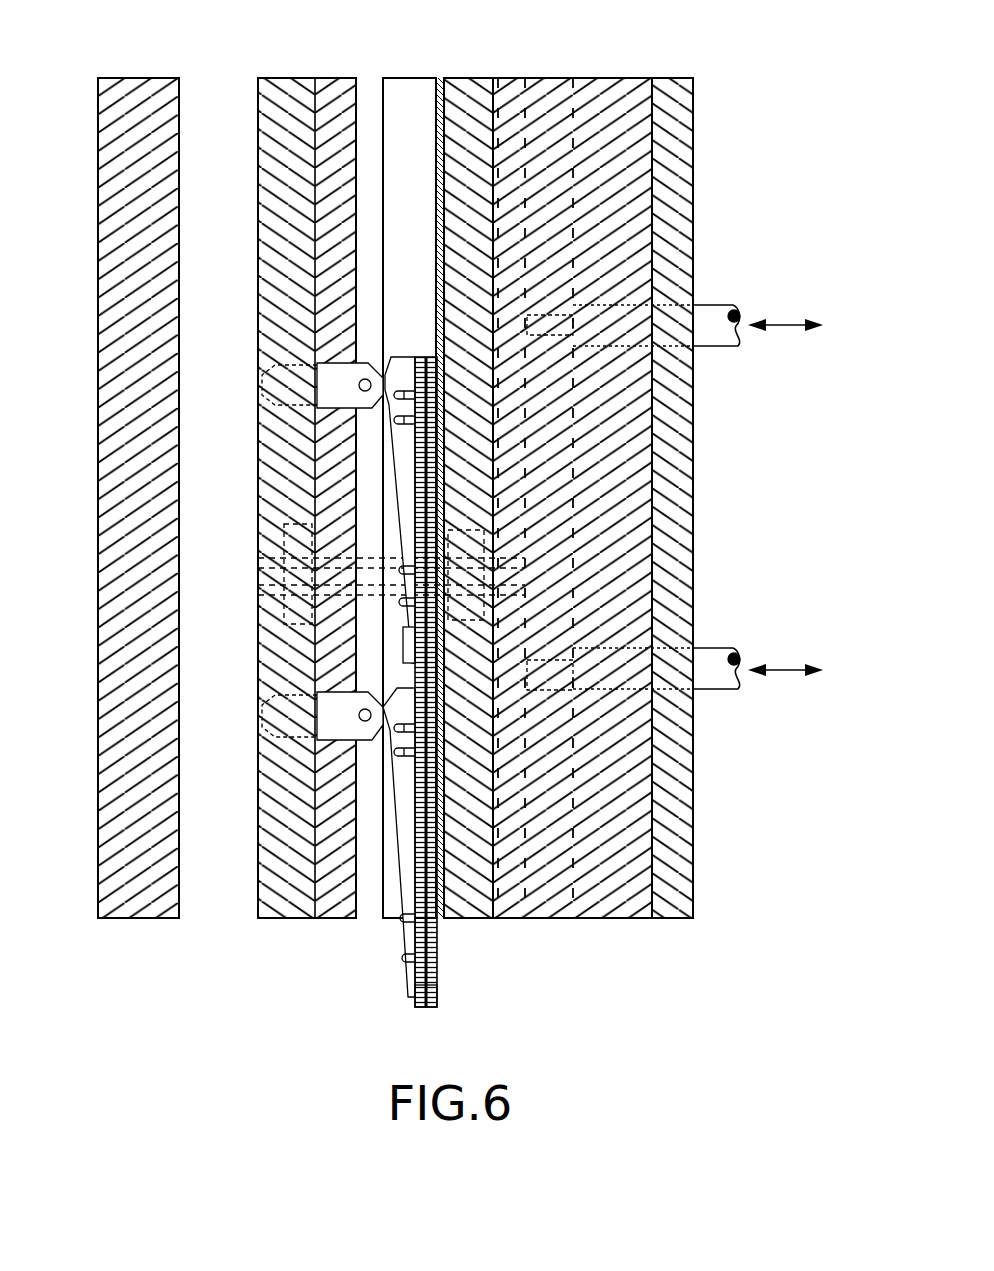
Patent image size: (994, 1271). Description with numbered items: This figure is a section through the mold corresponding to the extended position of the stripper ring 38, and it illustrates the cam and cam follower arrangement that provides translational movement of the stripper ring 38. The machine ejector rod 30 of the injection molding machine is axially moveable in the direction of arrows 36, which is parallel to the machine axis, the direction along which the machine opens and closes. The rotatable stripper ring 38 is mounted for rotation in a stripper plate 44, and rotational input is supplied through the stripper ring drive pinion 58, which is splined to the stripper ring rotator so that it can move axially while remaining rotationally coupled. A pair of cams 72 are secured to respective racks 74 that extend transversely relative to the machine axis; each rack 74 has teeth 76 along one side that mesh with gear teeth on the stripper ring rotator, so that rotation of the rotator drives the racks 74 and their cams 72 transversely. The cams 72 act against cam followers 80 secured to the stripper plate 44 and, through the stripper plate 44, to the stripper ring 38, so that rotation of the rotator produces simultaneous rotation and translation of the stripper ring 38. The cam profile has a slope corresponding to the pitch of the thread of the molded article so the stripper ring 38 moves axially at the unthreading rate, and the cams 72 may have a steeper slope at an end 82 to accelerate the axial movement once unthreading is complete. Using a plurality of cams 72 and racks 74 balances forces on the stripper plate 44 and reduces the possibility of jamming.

The stripper plate 44 is at (326, 58).
The machine ejector rod 30 is at (713, 340).
The arrows 36 is at (790, 325).
The stripper ring 38 is at (258, 580).
The stripper ring drive pinion 58 is at (295, 550).
The cams 72 is at (403, 457).
The racks 74 is at (422, 357).
The teeth 76 is at (438, 988).
The cam followers 80 is at (362, 392).
The end 82 is at (392, 370).